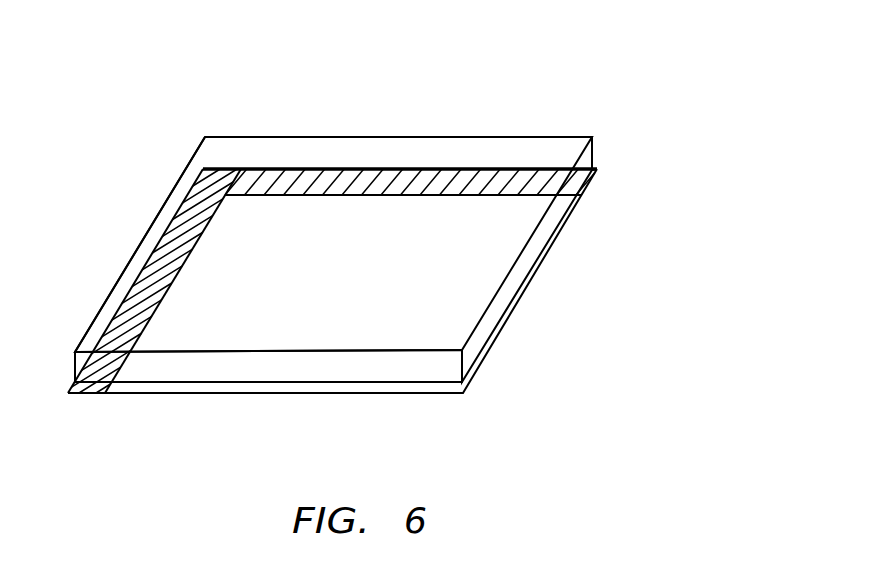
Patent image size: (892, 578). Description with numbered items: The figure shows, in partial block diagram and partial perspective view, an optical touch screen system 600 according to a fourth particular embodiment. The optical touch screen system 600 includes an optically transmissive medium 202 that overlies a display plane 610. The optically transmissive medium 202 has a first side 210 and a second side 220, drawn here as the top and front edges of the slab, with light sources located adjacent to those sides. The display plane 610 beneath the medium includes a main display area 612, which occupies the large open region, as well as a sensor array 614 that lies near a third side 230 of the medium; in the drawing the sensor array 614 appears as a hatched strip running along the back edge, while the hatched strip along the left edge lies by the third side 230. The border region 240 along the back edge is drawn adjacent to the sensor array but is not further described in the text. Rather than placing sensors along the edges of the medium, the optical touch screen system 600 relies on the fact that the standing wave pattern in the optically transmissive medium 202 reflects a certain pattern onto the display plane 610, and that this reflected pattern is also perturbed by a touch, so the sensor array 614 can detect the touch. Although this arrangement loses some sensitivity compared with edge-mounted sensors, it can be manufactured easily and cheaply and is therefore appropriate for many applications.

The optical touch screen system 600 is at (697, 97).
The first side 210 is at (493, 310).
The second side 220 is at (268, 372).
The display plane 610 is at (545, 258).
The top border region 240 is at (452, 152).
The third side 230 is at (127, 275).
The sensor array 614 is at (587, 182).
The main display area 612 is at (91, 393).
The optically transmissive medium 202 is at (373, 333).